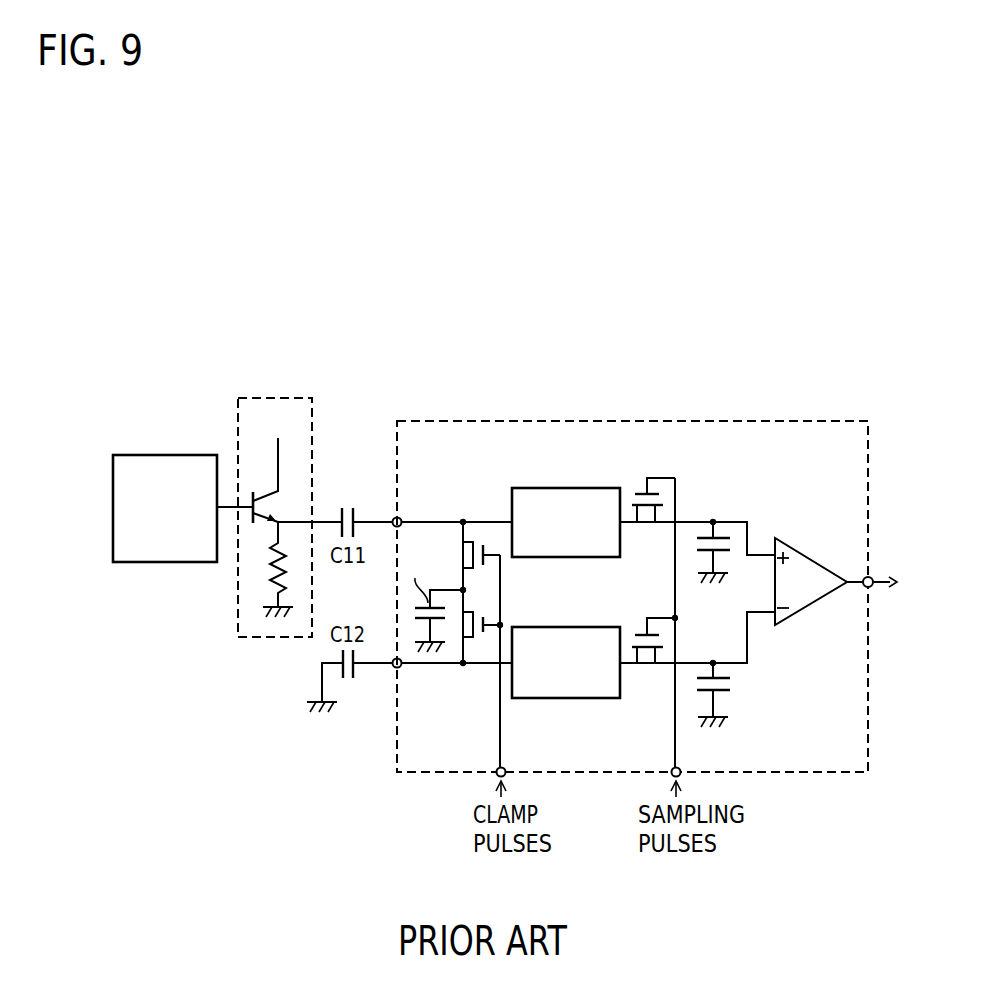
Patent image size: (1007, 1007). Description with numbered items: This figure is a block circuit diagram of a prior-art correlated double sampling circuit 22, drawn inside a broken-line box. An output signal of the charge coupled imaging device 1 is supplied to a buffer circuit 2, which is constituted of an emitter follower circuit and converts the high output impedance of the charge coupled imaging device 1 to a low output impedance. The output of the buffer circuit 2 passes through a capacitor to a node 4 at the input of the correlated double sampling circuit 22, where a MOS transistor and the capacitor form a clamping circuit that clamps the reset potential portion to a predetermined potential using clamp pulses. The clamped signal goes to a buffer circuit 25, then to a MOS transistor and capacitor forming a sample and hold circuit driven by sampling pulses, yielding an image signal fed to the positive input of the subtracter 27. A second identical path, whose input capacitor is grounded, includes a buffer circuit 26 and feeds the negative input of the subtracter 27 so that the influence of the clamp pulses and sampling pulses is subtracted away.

The charge coupled imaging device 1 is at (163, 455).
The buffer circuit 2 is at (272, 398).
The node 4 is at (394, 516).
The correlated double sampling circuit 22 is at (477, 418).
The buffer circuit 25 is at (545, 488).
The buffer circuit 26 is at (545, 627).
The subtracter 27 is at (796, 550).